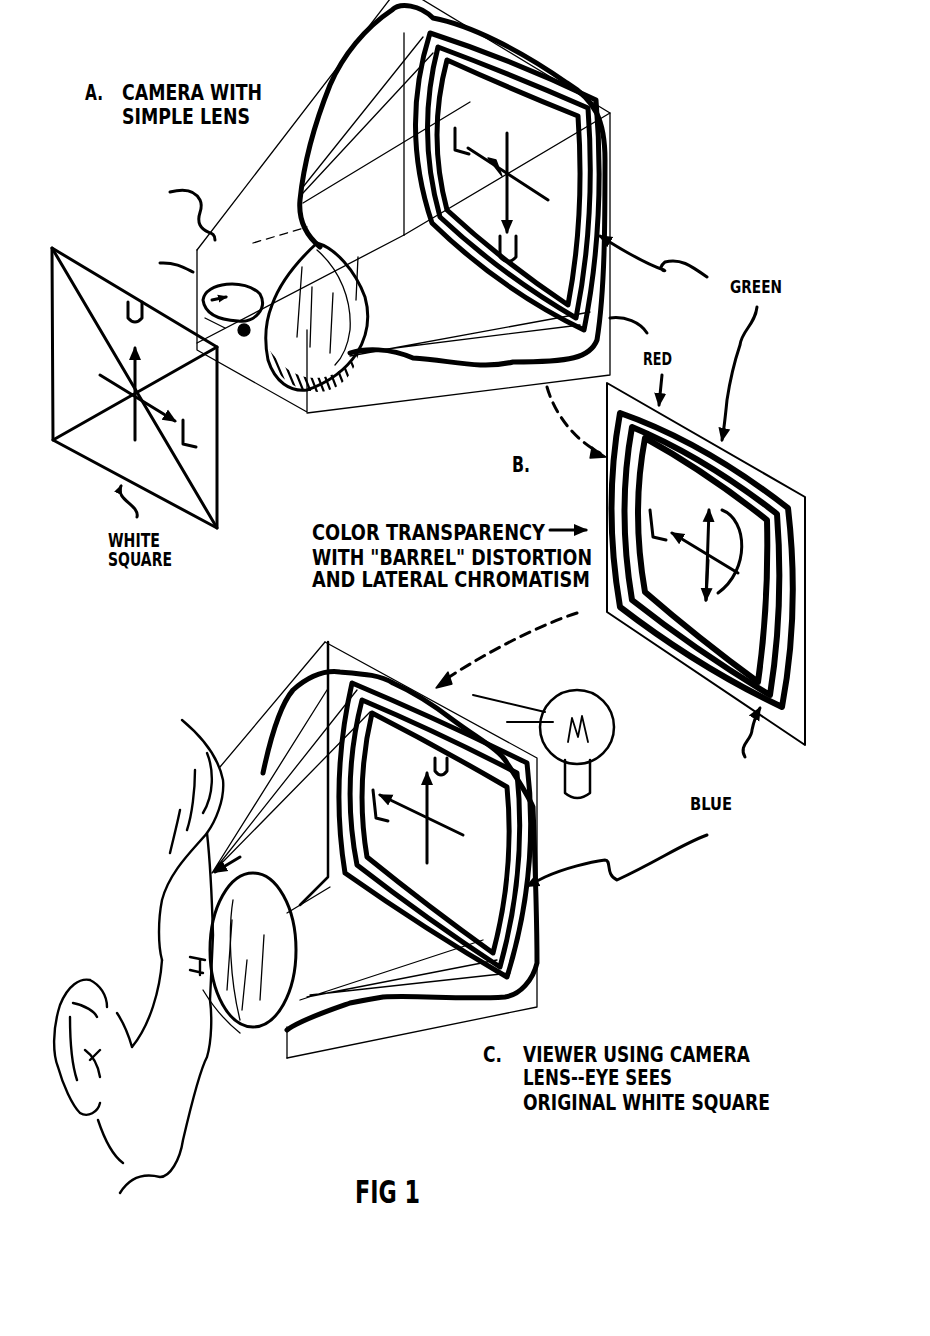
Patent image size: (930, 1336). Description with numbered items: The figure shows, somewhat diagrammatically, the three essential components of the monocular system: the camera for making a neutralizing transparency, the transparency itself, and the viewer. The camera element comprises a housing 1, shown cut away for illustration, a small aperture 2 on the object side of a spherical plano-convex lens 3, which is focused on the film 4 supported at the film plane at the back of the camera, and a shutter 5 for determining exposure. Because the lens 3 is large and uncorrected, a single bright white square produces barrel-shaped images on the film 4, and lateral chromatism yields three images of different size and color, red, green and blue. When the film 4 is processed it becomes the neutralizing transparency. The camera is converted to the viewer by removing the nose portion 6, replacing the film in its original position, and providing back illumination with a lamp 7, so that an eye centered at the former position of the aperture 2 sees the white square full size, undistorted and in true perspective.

The housing 1 is at (348, 41).
The aperture 2 is at (249, 348).
The spherical plano-convex lens 3 is at (363, 266).
The film 4 is at (452, 185).
The shutter 5 is at (208, 298).
The nose portion 6 is at (180, 228).
The lamp 7 is at (624, 728).